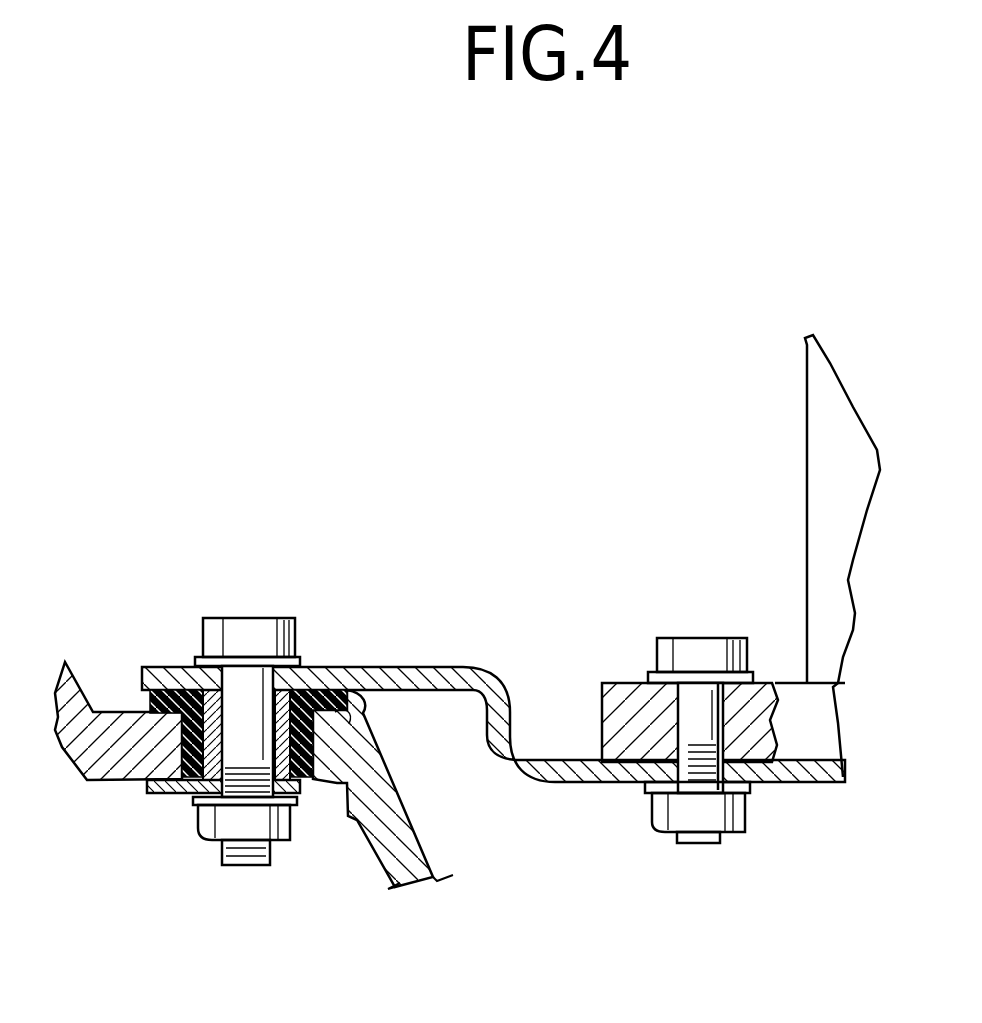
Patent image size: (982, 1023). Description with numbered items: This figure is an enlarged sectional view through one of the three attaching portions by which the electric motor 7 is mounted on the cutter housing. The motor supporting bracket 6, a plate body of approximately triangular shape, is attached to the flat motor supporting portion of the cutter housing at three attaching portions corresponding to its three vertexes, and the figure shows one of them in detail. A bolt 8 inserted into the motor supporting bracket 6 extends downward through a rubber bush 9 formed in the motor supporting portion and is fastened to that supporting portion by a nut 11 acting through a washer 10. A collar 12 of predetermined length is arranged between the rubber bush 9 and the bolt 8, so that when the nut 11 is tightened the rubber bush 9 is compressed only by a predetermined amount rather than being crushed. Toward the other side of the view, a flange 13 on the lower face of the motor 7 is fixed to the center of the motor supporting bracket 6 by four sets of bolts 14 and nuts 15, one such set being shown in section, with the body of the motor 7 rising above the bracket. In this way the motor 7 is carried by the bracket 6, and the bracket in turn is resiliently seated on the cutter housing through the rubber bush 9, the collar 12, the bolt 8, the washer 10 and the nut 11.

The motor supporting bracket 6 is at (443, 672).
The electric motor 7 is at (817, 438).
The bolt 8 is at (213, 627).
The rubber bush 9 is at (315, 745).
The washer 10 is at (172, 793).
The nut 11 is at (100, 763).
The collar 12 is at (293, 672).
The flange 13 is at (628, 690).
The bolt 14 is at (703, 652).
The nut 15 is at (700, 818).